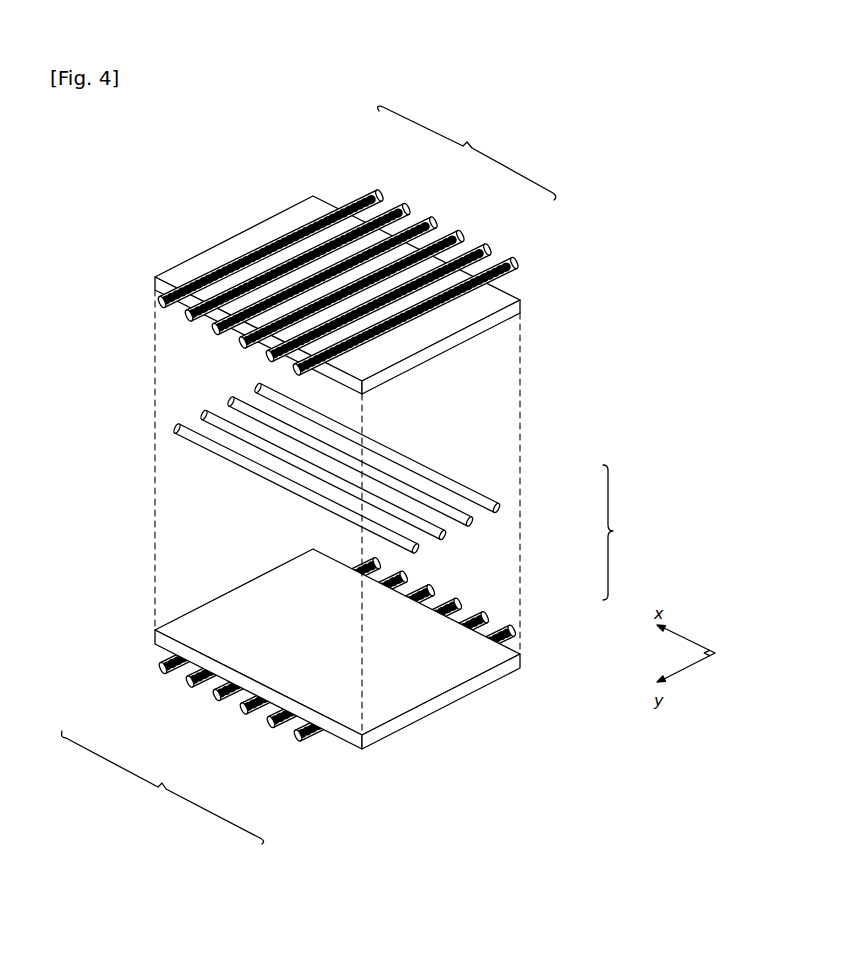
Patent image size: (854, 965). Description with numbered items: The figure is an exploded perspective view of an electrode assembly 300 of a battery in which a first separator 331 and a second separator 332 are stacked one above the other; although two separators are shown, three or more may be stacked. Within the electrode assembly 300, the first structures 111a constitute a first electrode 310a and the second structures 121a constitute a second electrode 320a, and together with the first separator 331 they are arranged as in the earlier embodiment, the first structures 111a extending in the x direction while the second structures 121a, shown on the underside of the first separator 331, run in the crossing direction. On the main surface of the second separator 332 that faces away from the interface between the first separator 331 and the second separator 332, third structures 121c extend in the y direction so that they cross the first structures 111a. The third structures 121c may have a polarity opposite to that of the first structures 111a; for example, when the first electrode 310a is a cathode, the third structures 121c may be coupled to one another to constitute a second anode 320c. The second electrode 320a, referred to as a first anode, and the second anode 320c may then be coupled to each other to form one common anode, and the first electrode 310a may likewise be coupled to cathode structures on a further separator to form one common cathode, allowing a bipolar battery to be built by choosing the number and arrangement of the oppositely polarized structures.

The electrode assembly 300 is at (360, 475).
The second separator 332 is at (522, 302).
The first separator 331 is at (480, 683).
The third structures 121c is at (513, 257).
The second anode 320c is at (467, 153).
The second structures 121a is at (285, 805).
The second electrode 320a is at (163, 787).
The first structures 111a is at (468, 492).
The first electrode 310a is at (631, 532).